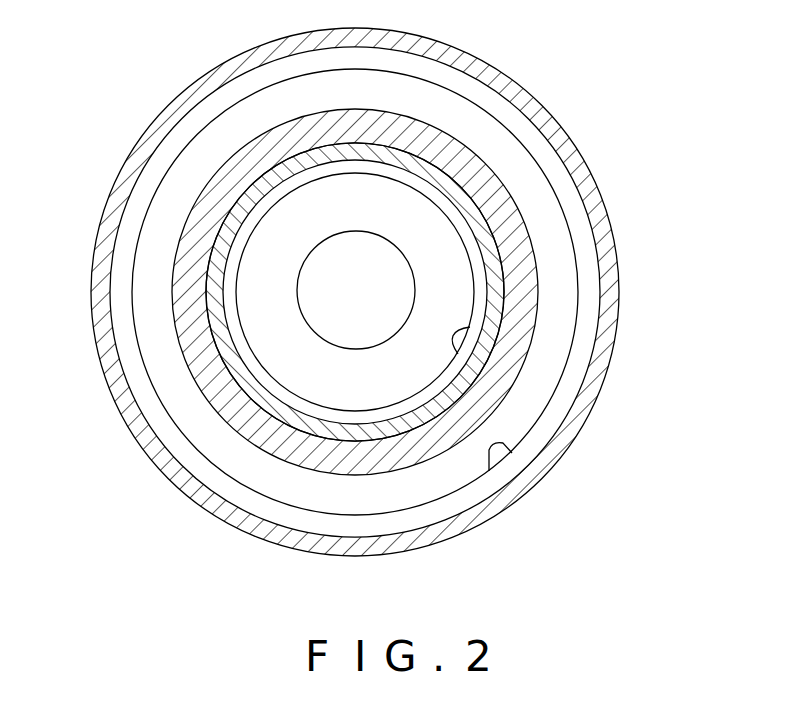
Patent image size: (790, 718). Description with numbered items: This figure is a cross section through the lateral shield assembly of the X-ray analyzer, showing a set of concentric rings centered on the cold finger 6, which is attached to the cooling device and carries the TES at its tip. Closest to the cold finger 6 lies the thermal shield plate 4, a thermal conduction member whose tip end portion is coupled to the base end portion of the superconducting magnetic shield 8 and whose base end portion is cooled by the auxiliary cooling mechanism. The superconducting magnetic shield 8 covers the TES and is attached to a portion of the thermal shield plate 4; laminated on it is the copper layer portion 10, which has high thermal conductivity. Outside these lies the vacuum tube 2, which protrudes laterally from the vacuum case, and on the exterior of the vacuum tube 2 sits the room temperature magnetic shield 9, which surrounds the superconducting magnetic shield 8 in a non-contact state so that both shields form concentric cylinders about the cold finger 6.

The vacuum tube 2 is at (503, 443).
The thermal shield plate 4 is at (468, 325).
The cold finger 6 is at (300, 315).
The superconducting magnetic shield 8 is at (537, 253).
The room temperature magnetic shield 9 is at (200, 497).
The copper layer portion 10 is at (480, 153).